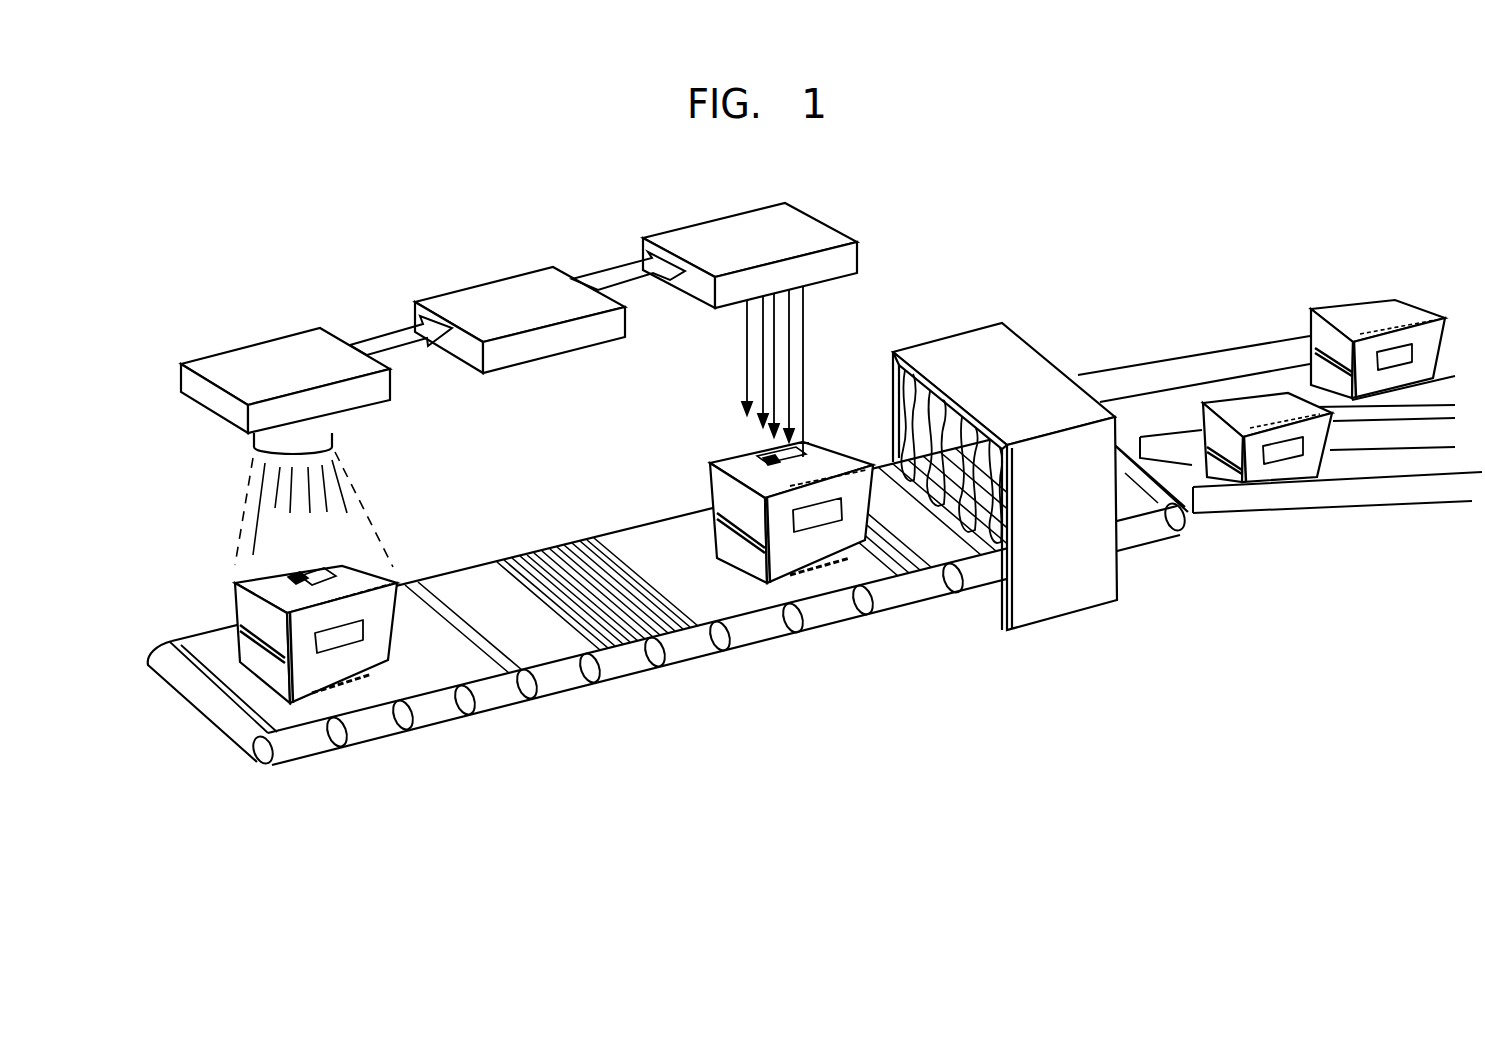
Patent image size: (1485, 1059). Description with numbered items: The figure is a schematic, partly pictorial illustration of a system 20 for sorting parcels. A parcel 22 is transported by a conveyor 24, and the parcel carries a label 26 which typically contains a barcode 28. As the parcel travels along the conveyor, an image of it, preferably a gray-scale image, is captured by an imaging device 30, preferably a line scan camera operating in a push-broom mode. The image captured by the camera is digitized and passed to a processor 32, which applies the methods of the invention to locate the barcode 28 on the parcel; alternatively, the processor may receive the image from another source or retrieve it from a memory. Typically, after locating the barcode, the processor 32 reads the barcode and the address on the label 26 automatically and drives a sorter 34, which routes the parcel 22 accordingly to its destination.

The system 20 is at (280, 128).
The parcel 22 is at (383, 628).
The conveyor 24 is at (524, 561).
The label 26 is at (302, 574).
The barcode 28 is at (318, 573).
The imaging device 30 is at (238, 367).
The processor 32 is at (477, 302).
The sorter 34 is at (705, 240).